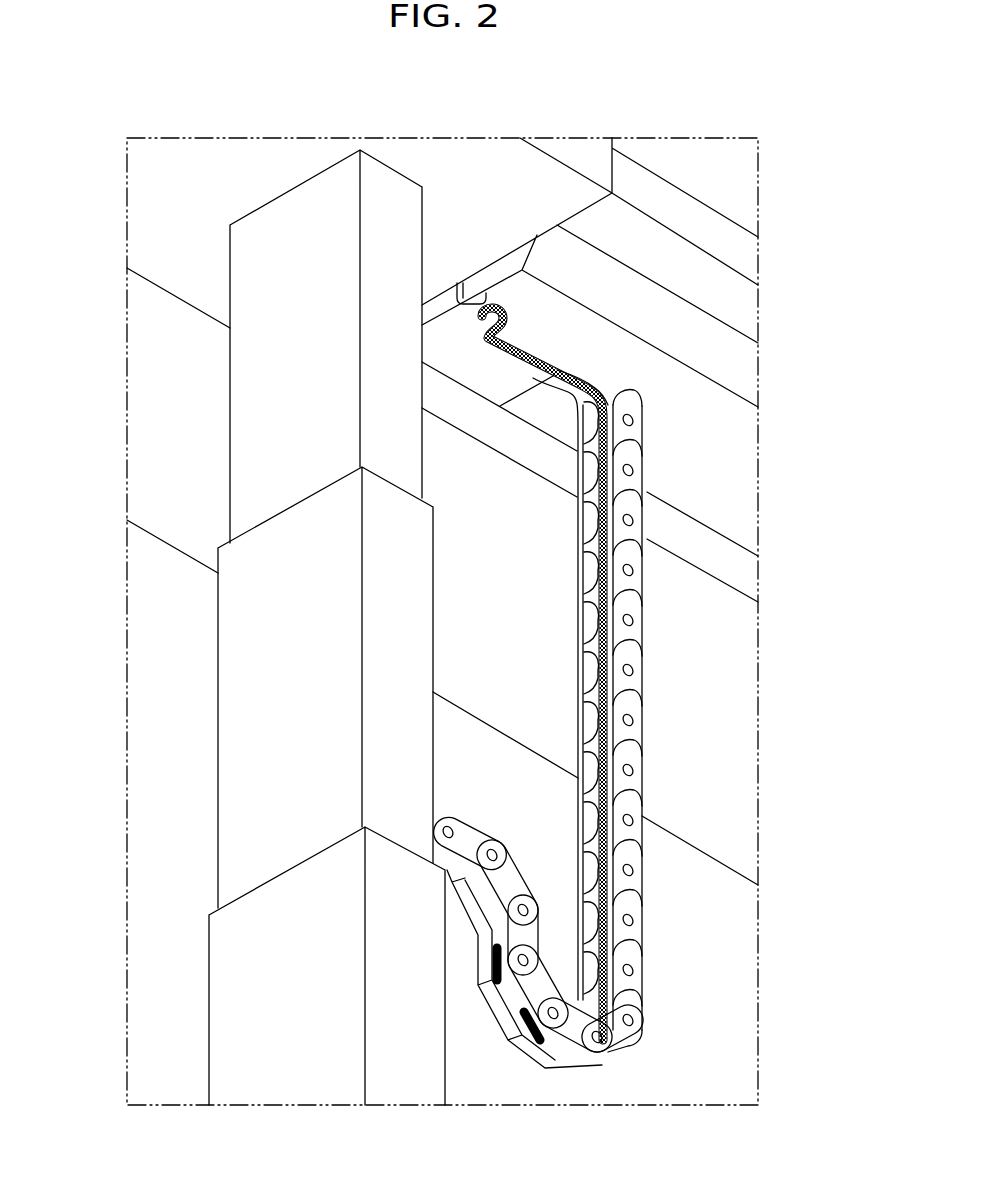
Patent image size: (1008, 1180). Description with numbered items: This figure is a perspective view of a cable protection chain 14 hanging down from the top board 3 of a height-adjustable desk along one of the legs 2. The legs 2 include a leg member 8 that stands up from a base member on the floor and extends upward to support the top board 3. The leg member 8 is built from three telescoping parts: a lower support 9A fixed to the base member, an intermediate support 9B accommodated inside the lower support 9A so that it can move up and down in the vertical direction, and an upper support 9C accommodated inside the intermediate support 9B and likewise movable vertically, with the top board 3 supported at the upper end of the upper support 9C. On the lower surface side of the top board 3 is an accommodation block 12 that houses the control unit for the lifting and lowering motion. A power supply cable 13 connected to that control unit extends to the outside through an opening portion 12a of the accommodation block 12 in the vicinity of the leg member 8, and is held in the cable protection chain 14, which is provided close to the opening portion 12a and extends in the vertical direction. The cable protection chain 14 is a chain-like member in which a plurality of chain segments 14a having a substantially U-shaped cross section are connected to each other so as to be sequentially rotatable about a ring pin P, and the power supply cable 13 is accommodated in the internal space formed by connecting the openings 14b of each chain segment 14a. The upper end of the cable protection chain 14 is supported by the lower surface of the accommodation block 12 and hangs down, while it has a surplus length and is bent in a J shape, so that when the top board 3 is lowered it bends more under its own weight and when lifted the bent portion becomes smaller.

The legs 2 is at (176, 695).
The top board 3 is at (673, 172).
The leg member 8 is at (257, 627).
The lower support 9A is at (228, 977).
The intermediate support 9B is at (233, 619).
The upper support 9C is at (240, 369).
The accommodation block 12 is at (725, 441).
The opening portion 12a is at (465, 298).
The power supply cable 13 is at (548, 370).
The cable protection chain 14 is at (636, 719).
The chain segment 14a is at (633, 647).
The opening 14b is at (592, 632).
The ring pin P is at (640, 725).